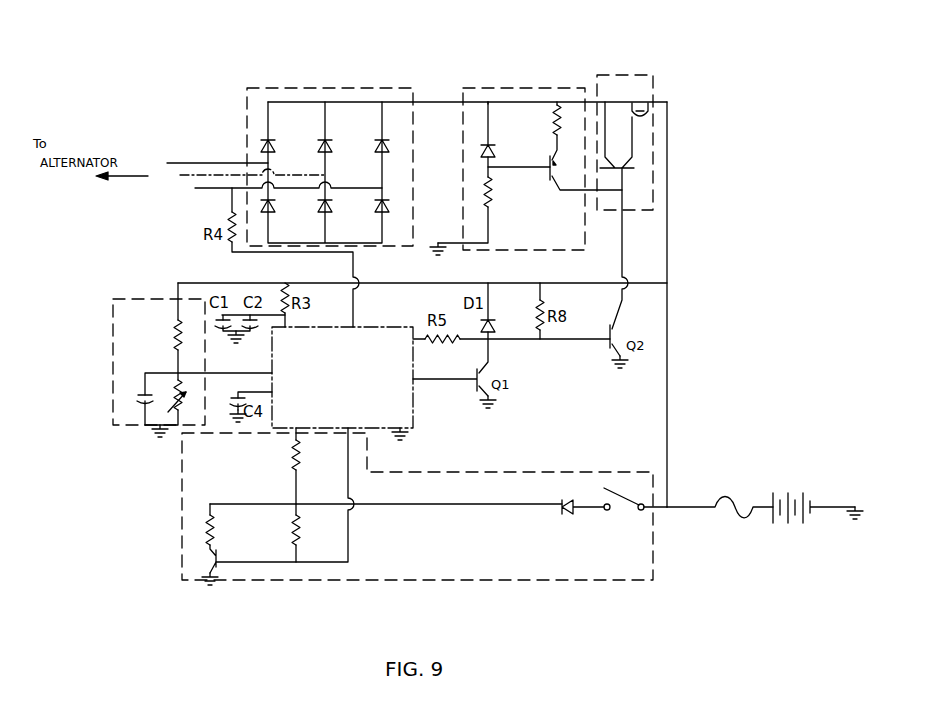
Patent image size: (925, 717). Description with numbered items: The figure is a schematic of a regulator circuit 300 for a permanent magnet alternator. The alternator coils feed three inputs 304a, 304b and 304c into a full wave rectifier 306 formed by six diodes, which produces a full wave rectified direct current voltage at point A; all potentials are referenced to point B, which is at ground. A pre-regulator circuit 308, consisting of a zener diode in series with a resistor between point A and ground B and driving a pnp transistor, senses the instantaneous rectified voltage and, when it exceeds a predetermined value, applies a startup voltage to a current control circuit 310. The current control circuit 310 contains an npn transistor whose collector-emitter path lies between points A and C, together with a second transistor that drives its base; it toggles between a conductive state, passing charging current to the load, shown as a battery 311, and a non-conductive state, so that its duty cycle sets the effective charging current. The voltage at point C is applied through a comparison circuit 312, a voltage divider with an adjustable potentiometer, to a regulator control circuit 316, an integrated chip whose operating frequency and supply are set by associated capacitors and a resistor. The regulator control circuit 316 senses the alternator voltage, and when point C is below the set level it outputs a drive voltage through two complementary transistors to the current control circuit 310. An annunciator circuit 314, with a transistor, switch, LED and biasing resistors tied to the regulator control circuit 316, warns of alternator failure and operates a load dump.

The regulator circuit 300 is at (745, 129).
The input 304a is at (166, 162).
The input 304b is at (180, 176).
The input 304c is at (196, 190).
The full wave rectifier 306 is at (258, 92).
The pre-regulator circuit 308 is at (543, 90).
The current control circuit 310 is at (652, 82).
The battery 311 is at (798, 496).
The comparison circuit 312 is at (113, 303).
The annunciator circuit 314 is at (655, 581).
The regulator control circuit 316 is at (414, 420).
The point A is at (487, 100).
The point B is at (855, 507).
The point C is at (667, 280).